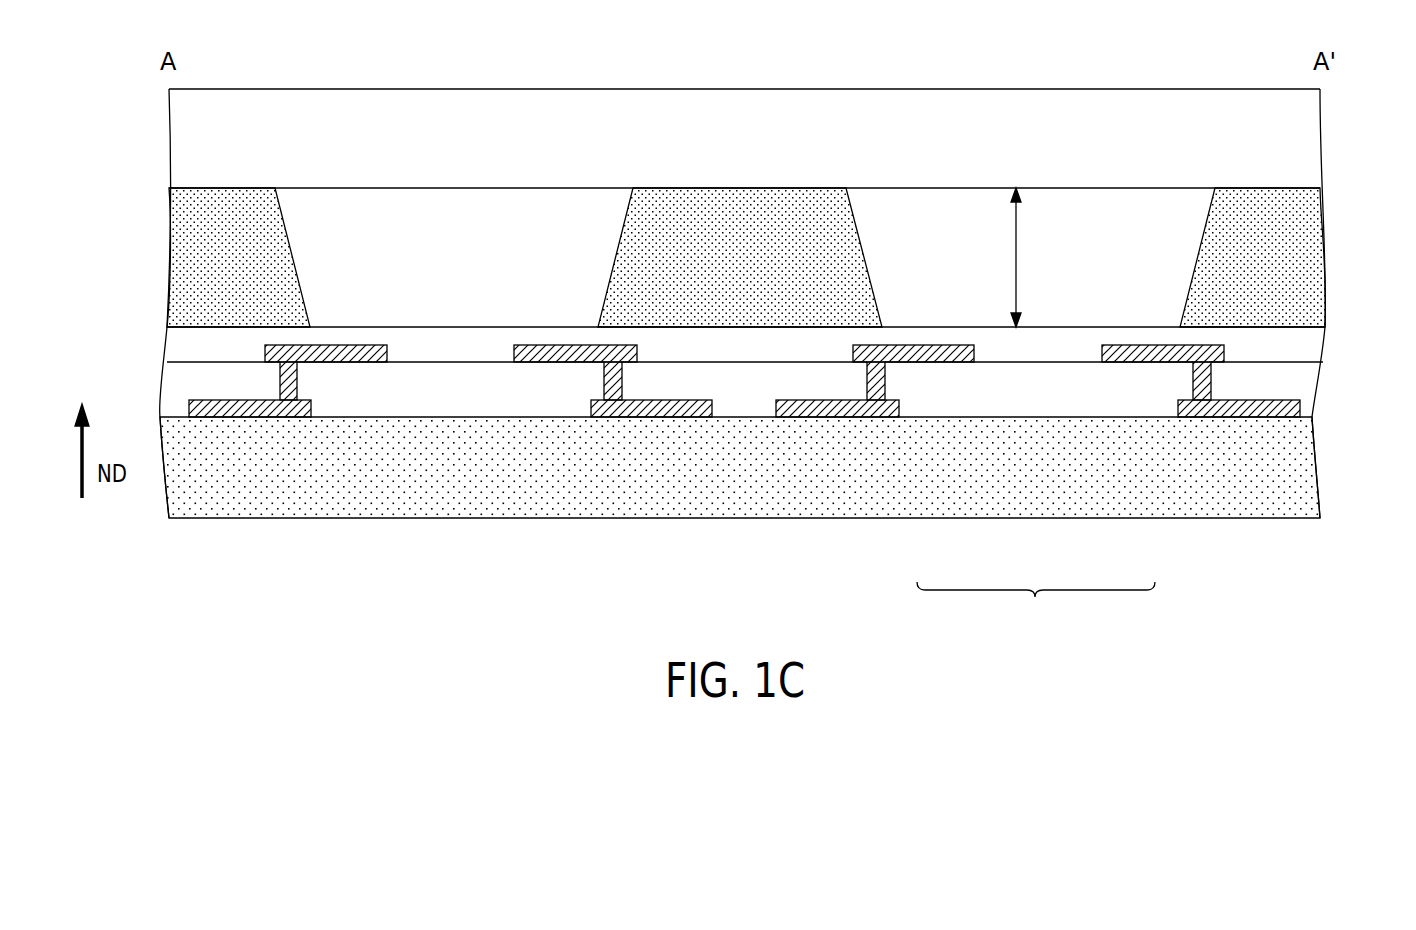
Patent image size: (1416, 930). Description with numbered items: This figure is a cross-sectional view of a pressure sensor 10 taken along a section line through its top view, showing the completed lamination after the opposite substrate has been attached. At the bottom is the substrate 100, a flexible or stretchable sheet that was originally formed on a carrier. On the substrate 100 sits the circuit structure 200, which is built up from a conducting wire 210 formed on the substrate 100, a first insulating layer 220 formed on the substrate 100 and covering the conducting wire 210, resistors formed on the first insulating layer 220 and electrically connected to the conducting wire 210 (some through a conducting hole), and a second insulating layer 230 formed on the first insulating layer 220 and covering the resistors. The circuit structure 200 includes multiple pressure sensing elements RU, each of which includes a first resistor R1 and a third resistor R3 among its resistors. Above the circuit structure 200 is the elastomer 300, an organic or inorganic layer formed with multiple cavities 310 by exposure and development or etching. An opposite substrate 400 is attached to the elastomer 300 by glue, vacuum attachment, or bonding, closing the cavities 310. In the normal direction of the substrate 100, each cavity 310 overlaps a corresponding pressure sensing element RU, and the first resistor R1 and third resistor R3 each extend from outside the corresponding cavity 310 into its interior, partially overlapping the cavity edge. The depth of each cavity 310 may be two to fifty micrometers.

The pressure sensor 10 is at (1378, 592).
The substrate 100 is at (1300, 467).
The circuit structure 200 is at (1333, 327).
The conducting wire 210 is at (667, 405).
The first insulating layer 220 is at (483, 390).
The second insulating layer 230 is at (419, 350).
The elastomer 300 is at (1307, 250).
The cavity 310 is at (1108, 223).
The opposite substrate 400 is at (1307, 135).
The first resistor R1 is at (940, 350).
The third resistor R3 is at (1133, 353).
The pressure sensing element RU is at (1036, 608).